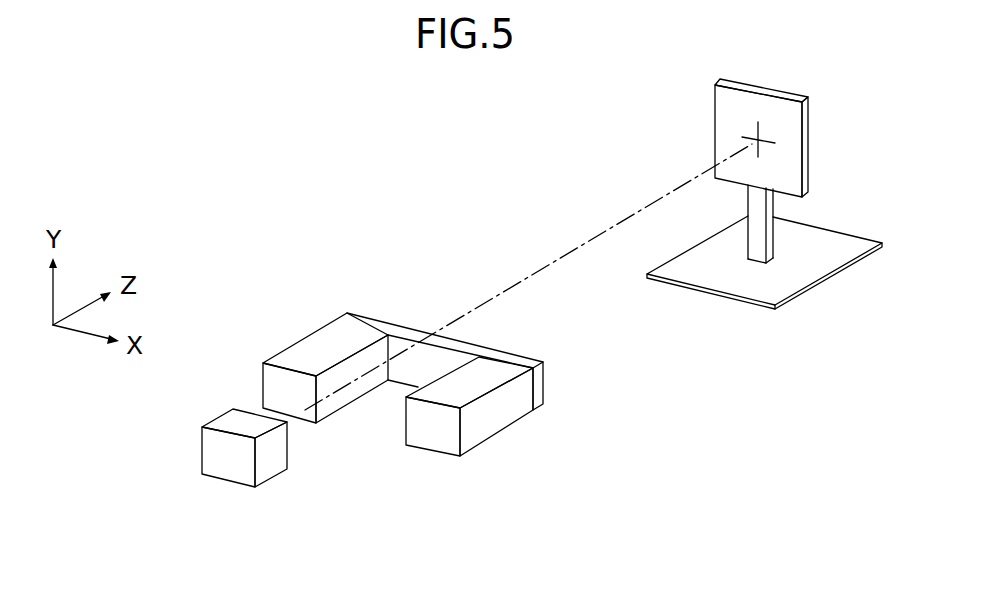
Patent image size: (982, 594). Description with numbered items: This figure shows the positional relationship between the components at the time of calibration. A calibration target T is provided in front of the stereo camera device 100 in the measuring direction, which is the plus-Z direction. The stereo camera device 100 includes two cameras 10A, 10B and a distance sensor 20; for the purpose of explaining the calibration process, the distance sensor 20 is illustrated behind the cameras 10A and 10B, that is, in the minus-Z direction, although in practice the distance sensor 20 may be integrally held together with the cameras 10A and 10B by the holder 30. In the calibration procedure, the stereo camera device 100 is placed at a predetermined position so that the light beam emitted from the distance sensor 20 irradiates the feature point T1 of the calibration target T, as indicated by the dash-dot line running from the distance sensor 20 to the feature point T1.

The stereo camera device 100 is at (363, 144).
The camera 10A is at (303, 353).
The camera 10B is at (502, 413).
The distance sensor 20 is at (267, 469).
The holder 30 is at (503, 357).
The calibration target T is at (730, 127).
The feature point T1 is at (768, 142).